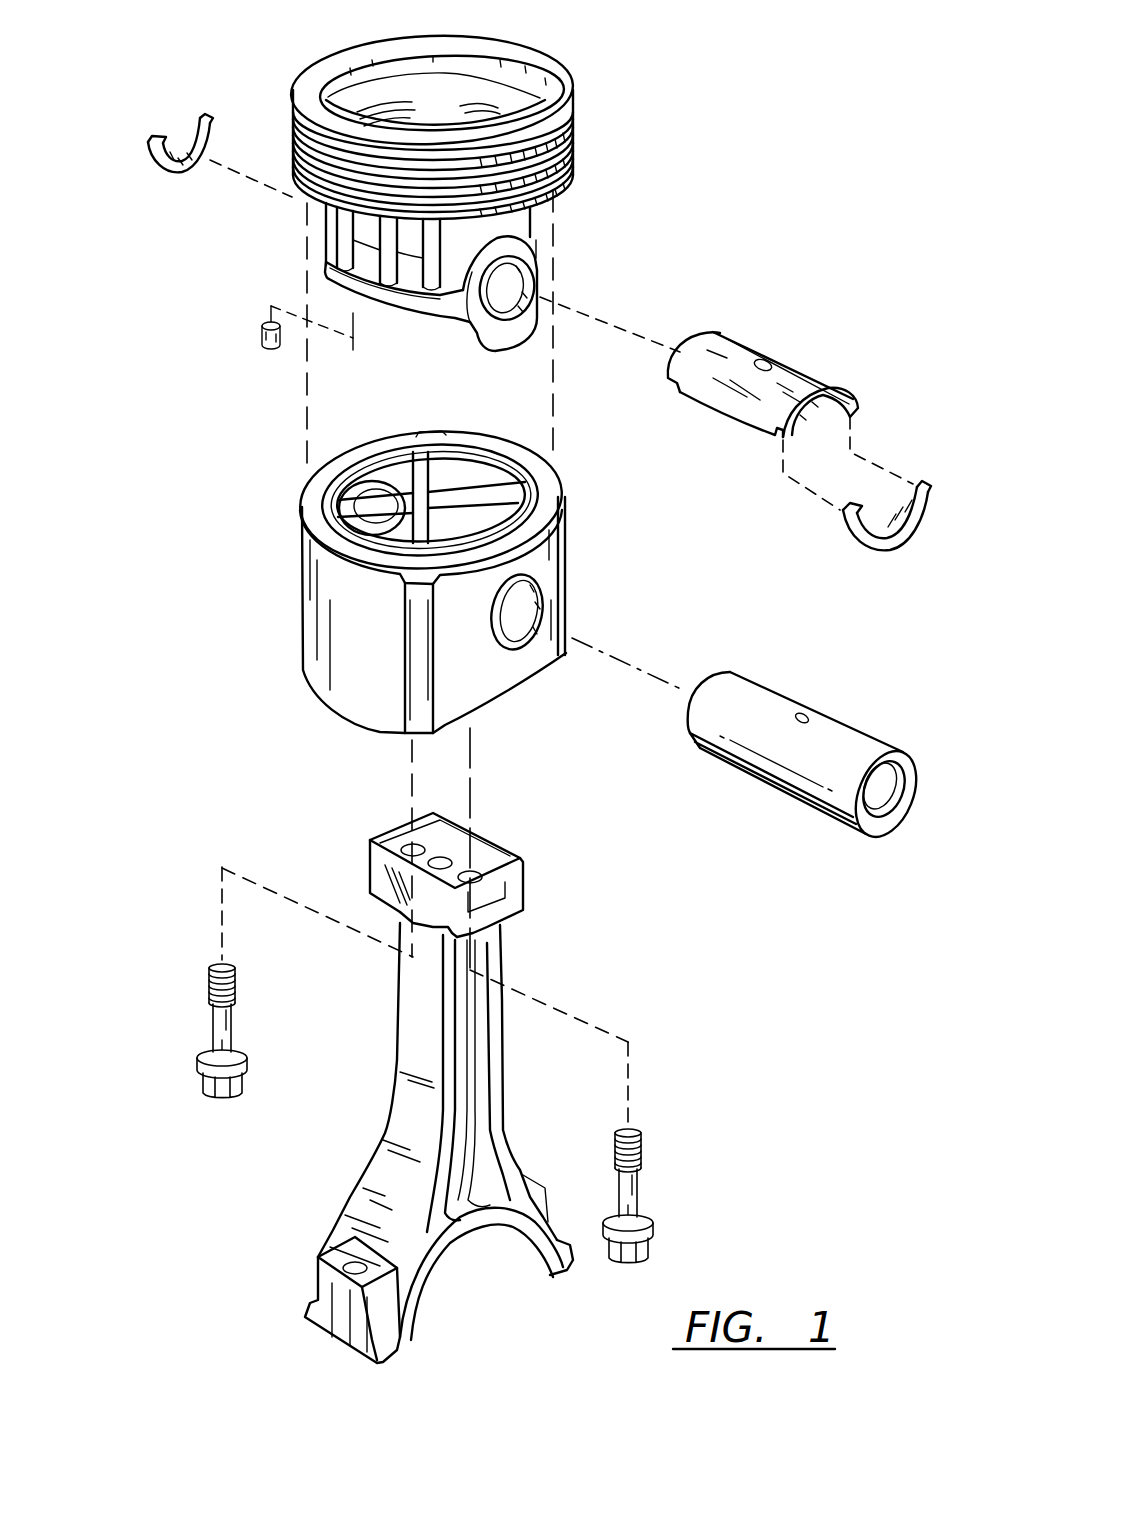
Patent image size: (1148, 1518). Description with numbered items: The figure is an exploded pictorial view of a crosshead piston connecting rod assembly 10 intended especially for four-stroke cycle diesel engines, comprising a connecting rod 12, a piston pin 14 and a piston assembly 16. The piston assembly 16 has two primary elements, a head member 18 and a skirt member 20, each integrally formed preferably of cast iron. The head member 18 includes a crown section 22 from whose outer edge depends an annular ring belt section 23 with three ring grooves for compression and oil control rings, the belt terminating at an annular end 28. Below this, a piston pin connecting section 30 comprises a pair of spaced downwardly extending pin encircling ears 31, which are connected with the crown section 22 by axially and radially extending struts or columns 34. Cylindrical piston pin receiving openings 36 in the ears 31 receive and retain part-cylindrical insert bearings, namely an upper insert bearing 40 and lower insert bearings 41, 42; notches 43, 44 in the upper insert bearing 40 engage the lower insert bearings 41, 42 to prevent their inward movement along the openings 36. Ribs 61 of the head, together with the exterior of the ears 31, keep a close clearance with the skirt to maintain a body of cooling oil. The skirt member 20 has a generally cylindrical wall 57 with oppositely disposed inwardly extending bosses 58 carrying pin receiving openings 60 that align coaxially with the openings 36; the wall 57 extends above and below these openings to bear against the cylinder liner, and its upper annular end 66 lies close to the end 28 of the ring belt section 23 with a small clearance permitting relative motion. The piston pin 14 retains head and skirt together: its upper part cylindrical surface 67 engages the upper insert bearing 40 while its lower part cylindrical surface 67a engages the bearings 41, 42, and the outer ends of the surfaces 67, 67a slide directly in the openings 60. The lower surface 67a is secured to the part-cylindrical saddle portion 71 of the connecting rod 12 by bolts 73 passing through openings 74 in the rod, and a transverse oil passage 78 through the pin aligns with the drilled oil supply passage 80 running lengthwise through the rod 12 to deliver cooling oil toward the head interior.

The crosshead piston connecting rod assembly 10 is at (195, 497).
The connecting rod 12 is at (500, 1058).
The piston pin 14 is at (843, 748).
The piston assembly 16 is at (198, 274).
The head member 18 is at (605, 118).
The skirt member 20 is at (567, 514).
The crown section 22 is at (522, 74).
The annular ring belt section 23 is at (568, 156).
The annular end 28 is at (553, 203).
The piston pin connecting section 30 is at (405, 248).
The pin encircling ears 31 is at (472, 335).
The struts or columns 34 is at (362, 232).
The piston pin receiving openings 36 is at (520, 296).
The upper insert bearing 40 is at (788, 375).
The lower insert bearing 41 is at (863, 532).
The lower insert bearing 42 is at (178, 150).
The notch 43 is at (853, 413).
The notch 44 is at (670, 383).
The cylindrical wall 57 is at (352, 616).
The bosses 58 is at (395, 500).
The pin receiving openings 60 is at (388, 510).
The ribs 61 is at (393, 318).
The annular end 66 is at (535, 460).
The upper part cylindrical surface 67 is at (752, 688).
The lower part cylindrical surface 67a is at (774, 787).
The saddle portion 71 is at (488, 858).
The bolts 73 is at (215, 1023).
The openings 74 is at (412, 847).
The transverse oil passage 78 is at (802, 713).
The oil supply passage 80 is at (443, 860).